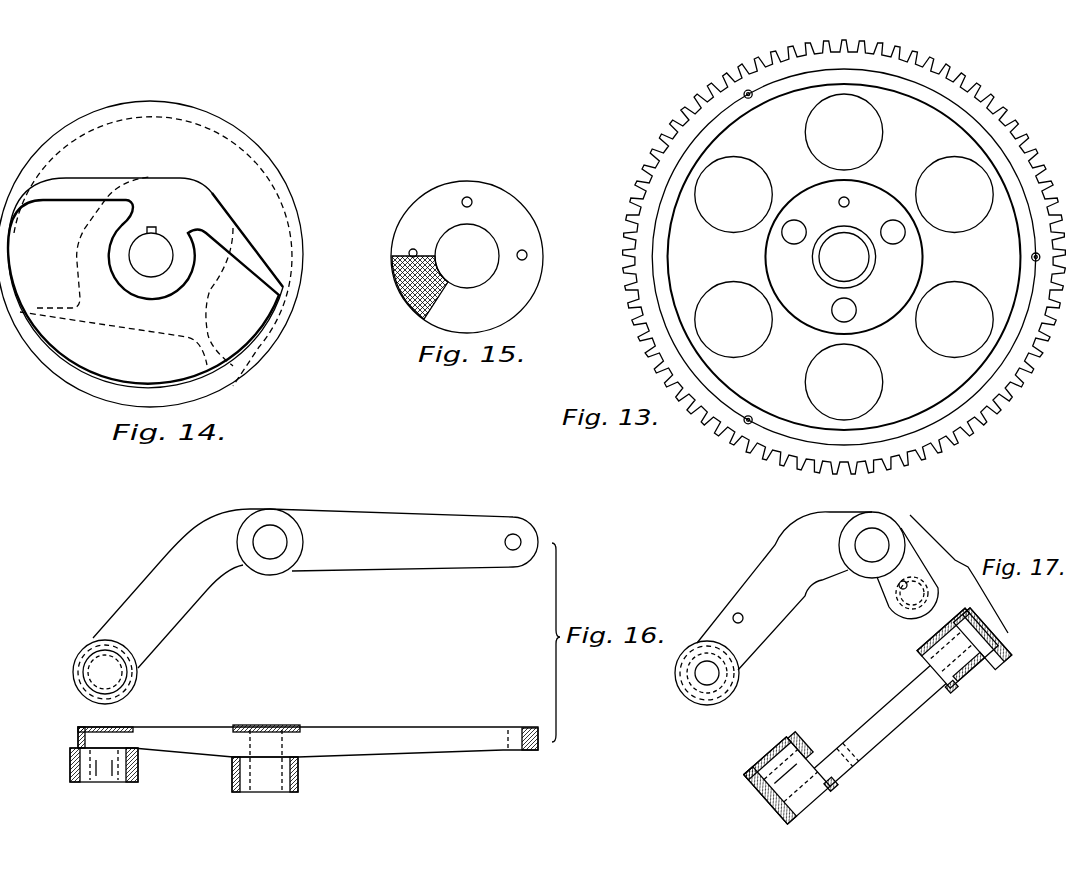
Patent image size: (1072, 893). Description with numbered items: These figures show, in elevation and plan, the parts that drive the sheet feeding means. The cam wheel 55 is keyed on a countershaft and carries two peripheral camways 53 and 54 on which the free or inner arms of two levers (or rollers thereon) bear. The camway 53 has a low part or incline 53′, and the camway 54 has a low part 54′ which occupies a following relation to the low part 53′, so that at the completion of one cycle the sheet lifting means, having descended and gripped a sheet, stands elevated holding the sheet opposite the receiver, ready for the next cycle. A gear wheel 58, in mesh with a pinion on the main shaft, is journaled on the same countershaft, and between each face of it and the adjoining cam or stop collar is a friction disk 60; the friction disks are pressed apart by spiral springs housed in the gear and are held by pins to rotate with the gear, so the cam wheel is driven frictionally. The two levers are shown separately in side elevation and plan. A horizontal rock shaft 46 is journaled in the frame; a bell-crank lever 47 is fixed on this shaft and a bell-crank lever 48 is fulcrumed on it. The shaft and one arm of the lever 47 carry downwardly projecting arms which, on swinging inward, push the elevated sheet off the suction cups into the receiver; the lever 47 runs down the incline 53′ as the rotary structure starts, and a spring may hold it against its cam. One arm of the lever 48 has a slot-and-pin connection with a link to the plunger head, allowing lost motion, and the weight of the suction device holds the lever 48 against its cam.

In FIG. 14, the peripheral camway 53 is at (305, 268).
In FIG. 14, the peripheral camway 54 is at (70, 382).
In FIG. 14, the low part of cam 54 54′ is at (110, 174).
In FIG. 14, the low part of cam 53 53′ is at (200, 365).
In FIG. 14, the cam wheel 55 is at (251, 284).
In FIG. 15, the friction disk 60 is at (532, 293).
In FIG. 13, the gear wheel 58 is at (844, 257).
In FIG. 16, the bell-crank lever 48 is at (367, 517).
In FIG. 16, the rock shaft 46 is at (363, 734).
In FIG. 17, the bell-crank lever 47 is at (780, 624).